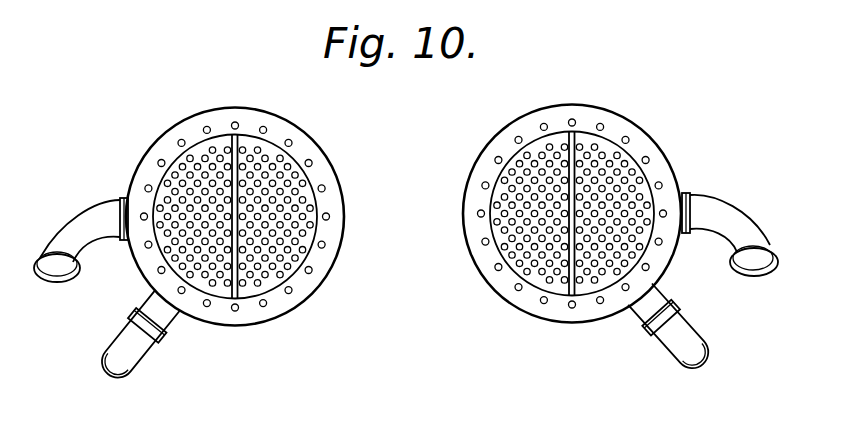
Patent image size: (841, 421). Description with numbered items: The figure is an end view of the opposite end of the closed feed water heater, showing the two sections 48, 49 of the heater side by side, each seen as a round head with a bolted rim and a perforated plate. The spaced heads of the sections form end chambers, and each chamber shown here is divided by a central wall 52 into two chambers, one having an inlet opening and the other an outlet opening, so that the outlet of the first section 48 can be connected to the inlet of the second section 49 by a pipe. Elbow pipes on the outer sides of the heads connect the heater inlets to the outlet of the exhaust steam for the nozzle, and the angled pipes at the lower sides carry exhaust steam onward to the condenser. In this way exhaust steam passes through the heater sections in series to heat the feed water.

The section of closed feed water heater 48 is at (542, 312).
The section of closed feed water heater 49 is at (267, 318).
The central wall 52 is at (575, 132).